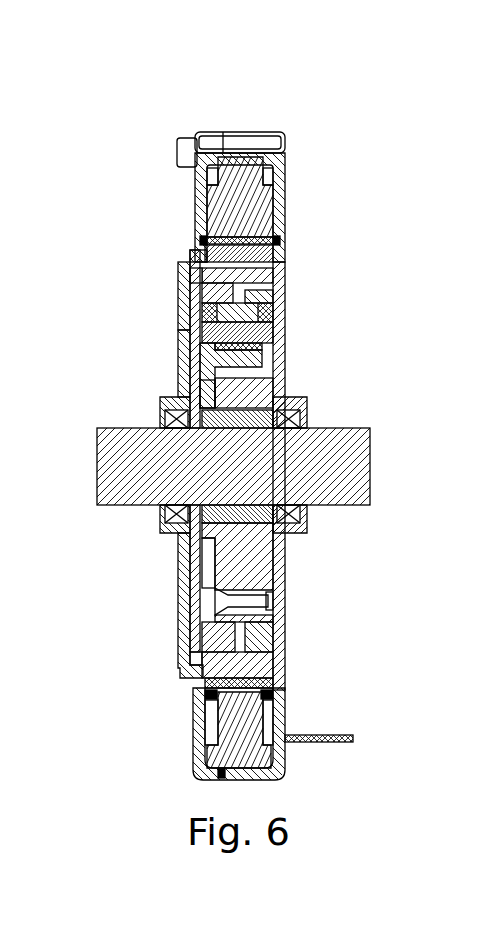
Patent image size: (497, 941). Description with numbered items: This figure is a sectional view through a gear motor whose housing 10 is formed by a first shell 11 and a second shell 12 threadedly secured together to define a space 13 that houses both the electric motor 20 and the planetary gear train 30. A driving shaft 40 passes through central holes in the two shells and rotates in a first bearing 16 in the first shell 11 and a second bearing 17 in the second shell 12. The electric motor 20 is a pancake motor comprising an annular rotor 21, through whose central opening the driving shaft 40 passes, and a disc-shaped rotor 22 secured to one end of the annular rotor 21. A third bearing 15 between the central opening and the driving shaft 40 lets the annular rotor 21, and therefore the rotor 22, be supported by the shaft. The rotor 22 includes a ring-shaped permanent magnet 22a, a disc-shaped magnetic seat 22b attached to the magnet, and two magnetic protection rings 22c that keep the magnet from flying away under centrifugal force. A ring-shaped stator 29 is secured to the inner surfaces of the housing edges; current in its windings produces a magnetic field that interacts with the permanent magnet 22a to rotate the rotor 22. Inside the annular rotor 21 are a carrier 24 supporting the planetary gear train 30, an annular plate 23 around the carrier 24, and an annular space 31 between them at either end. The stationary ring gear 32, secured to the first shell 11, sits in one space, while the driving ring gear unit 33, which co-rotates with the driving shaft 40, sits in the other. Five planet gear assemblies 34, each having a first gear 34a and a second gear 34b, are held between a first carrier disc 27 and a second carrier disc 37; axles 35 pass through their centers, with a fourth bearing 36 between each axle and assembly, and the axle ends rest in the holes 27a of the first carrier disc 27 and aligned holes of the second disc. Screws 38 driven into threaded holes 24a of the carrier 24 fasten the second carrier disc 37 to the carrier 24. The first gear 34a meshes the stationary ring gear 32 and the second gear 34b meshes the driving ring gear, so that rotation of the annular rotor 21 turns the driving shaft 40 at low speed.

The housing 10 is at (284, 128).
The first shell 11 is at (283, 598).
The second shell 12 is at (183, 591).
The space 13 is at (193, 768).
The third bearing 15 is at (183, 550).
The first bearing 16 is at (305, 527).
The second bearing 17 is at (165, 515).
The electric motor 20 is at (283, 250).
The annular rotor 21 is at (283, 295).
The rotor 22 is at (283, 268).
The permanent magnet 22a is at (197, 250).
The magnetic seat 22b is at (182, 265).
The magnetic protection rings 22c is at (283, 230).
The annular plate 23 is at (283, 646).
The carrier 24 is at (283, 553).
The threaded holes 24a is at (283, 576).
The first carrier disc 27 is at (283, 373).
The holes 27a is at (283, 338).
The stator 29 is at (285, 193).
The planetary gear train 30 is at (283, 327).
The annular space 31 is at (283, 665).
The stationary ring gear 32 is at (283, 633).
The driving ring gear unit 33 is at (183, 636).
The planet gear assemblies 34 is at (182, 288).
The first gear 34a is at (283, 384).
The second gear 34b is at (182, 375).
The axles 35 is at (182, 332).
The fourth bearing 36 is at (182, 310).
The second carrier disc 37 is at (182, 360).
The screws 38 is at (183, 605).
The driving shaft 40 is at (348, 467).